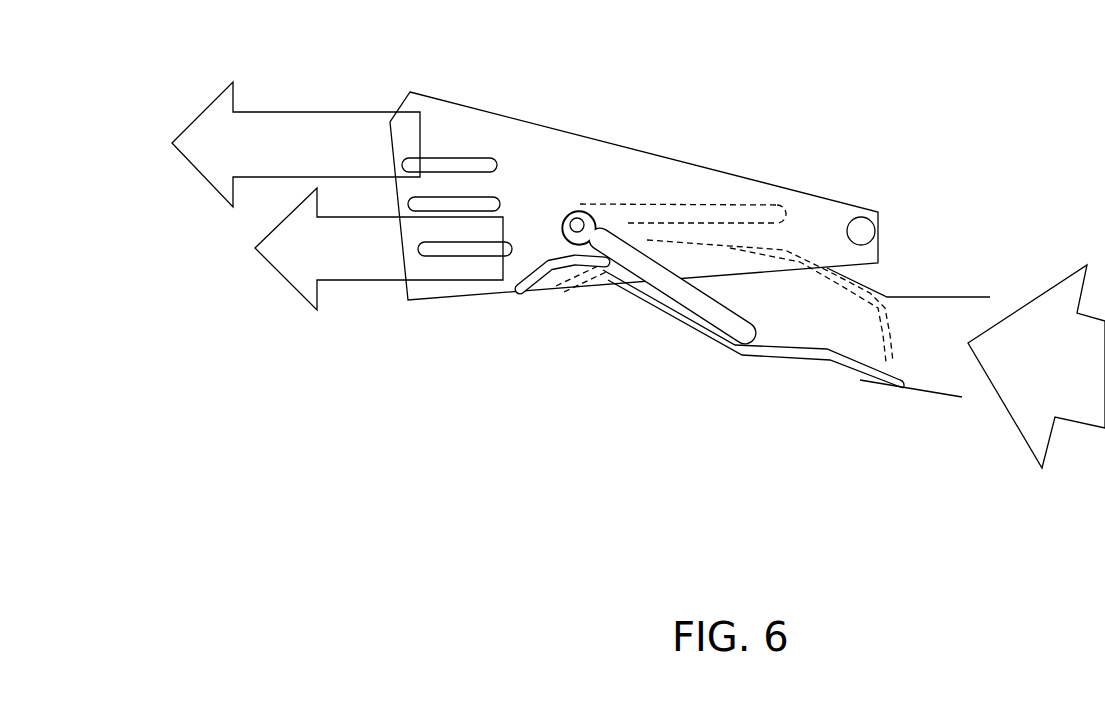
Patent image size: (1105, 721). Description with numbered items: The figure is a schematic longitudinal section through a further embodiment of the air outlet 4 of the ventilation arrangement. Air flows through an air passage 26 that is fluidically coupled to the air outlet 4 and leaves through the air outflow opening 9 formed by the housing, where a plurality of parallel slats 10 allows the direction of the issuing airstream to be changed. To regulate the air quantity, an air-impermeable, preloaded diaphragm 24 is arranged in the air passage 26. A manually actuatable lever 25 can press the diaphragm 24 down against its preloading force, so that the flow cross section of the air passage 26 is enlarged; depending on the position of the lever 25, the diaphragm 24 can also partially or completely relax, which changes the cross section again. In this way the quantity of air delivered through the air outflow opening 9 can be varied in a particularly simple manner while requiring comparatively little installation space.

The air outlet 4 is at (612, 168).
The air outflow opening 9 is at (352, 288).
The slats 10 is at (503, 242).
The diaphragm 24 is at (885, 327).
The lever 25 is at (627, 204).
The air passage 26 is at (927, 370).